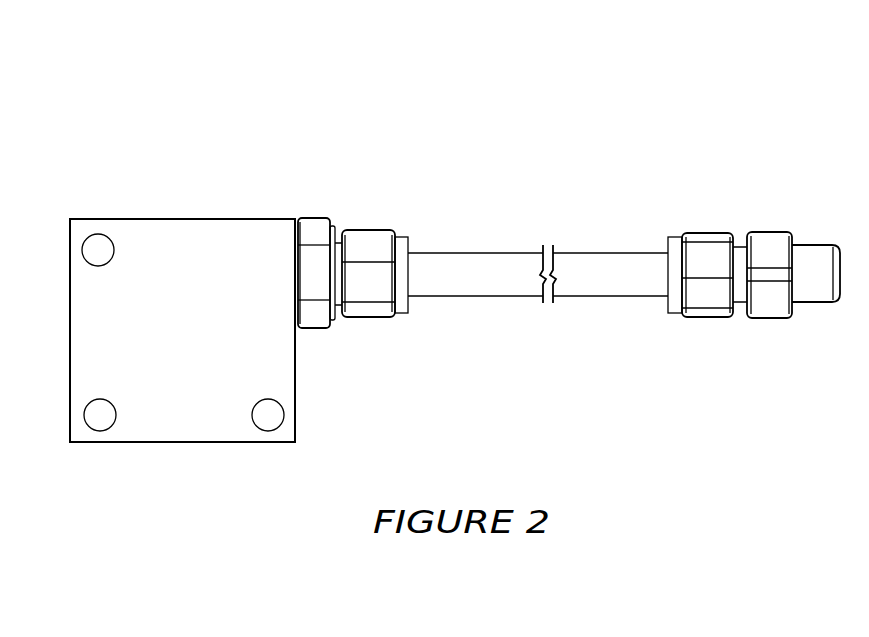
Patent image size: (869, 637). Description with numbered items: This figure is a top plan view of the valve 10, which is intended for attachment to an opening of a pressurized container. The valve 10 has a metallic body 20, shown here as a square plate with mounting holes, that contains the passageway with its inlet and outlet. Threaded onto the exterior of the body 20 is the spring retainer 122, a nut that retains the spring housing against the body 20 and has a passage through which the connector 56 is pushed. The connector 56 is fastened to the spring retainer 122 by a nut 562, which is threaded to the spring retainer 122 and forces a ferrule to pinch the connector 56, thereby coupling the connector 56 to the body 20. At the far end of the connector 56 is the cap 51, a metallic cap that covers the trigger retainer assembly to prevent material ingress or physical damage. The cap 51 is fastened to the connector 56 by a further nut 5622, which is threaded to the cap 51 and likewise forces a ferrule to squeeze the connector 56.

The valve 10 is at (593, 100).
The body 20 is at (175, 217).
The spring retainer 122 is at (318, 330).
The nut 562 is at (373, 318).
The connector 56 is at (606, 252).
The nut 5622 is at (710, 312).
The cap 51 is at (817, 302).